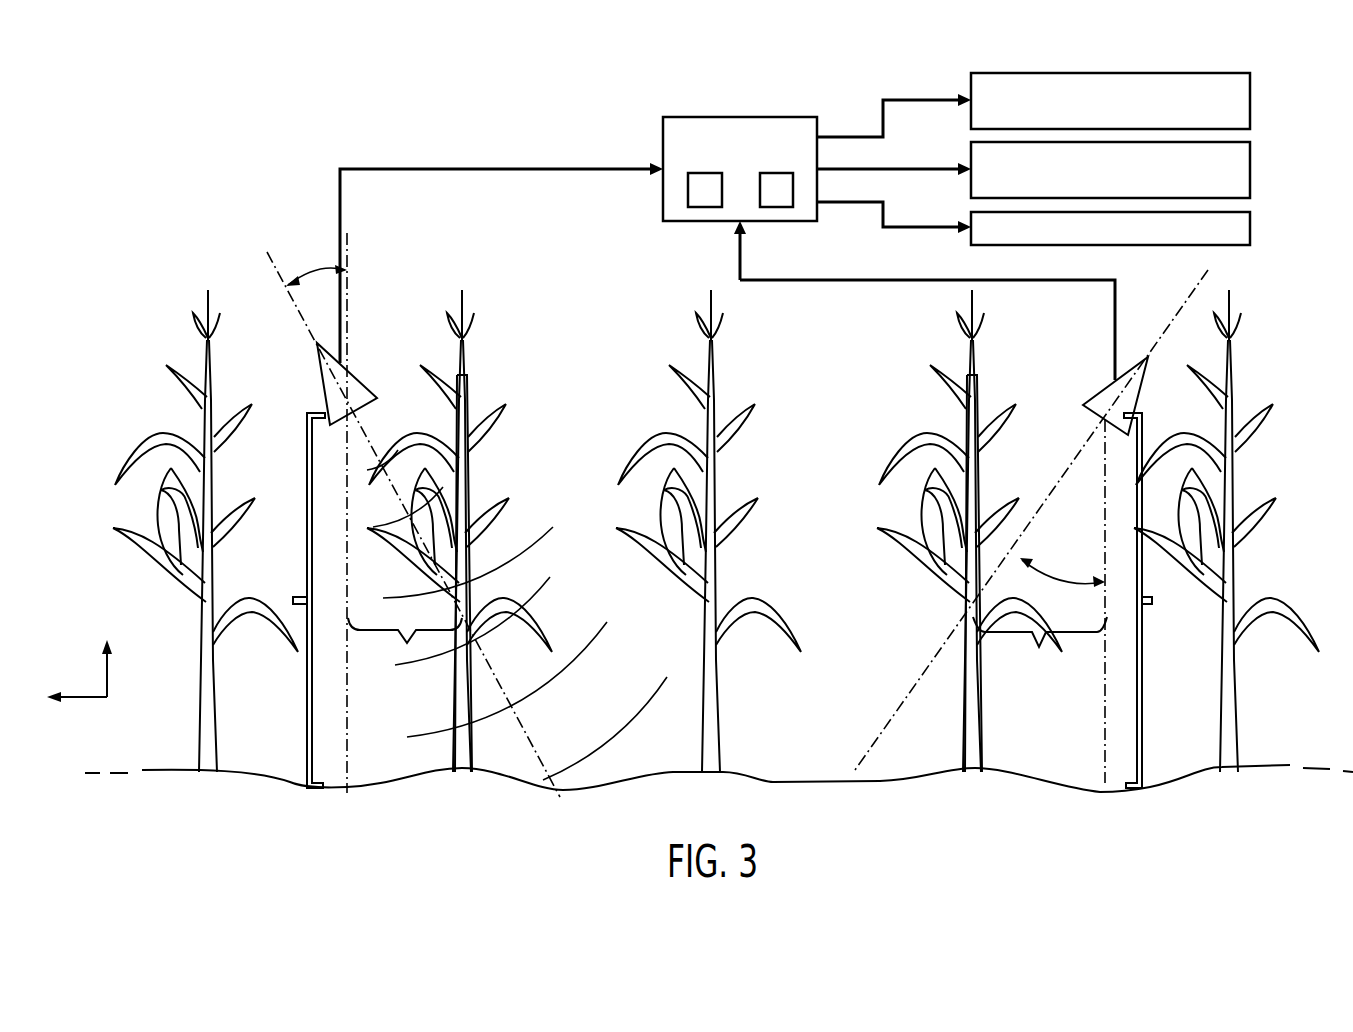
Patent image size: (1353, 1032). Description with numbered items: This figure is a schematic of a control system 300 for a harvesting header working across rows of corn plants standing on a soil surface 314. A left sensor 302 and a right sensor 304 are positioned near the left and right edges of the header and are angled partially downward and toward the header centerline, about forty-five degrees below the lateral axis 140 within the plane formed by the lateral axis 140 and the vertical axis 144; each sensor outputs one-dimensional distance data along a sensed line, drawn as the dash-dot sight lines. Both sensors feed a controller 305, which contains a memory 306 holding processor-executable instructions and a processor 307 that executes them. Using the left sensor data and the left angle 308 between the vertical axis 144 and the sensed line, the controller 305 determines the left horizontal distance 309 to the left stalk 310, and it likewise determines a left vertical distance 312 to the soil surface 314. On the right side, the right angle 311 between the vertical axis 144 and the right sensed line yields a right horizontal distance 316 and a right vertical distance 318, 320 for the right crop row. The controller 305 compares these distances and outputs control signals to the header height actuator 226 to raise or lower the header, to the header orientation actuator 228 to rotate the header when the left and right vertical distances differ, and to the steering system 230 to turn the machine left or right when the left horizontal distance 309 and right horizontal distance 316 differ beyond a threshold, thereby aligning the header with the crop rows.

The control system 300 is at (176, 176).
The left sensor 302 is at (367, 383).
The right sensor 304 is at (1130, 360).
The controller 305 is at (741, 175).
The memory 306 is at (702, 207).
The processor 307 is at (777, 207).
The left angle 308 is at (316, 272).
The left horizontal distance 309 is at (408, 643).
The left stalk 310 is at (467, 377).
The right angle 311 is at (1058, 582).
The left vertical distance 312 is at (296, 598).
The soil surface 314 is at (752, 777).
The right horizontal distance 316 is at (1040, 646).
The right vertical distance 318 is at (977, 377).
The right vertical distance 320 is at (1152, 600).
The header height actuator 226 is at (1250, 100).
The header orientation actuator 228 is at (1250, 168).
The steering system 230 is at (1250, 225).
The lateral axis 140 is at (83, 698).
The vertical axis 144 is at (107, 674).